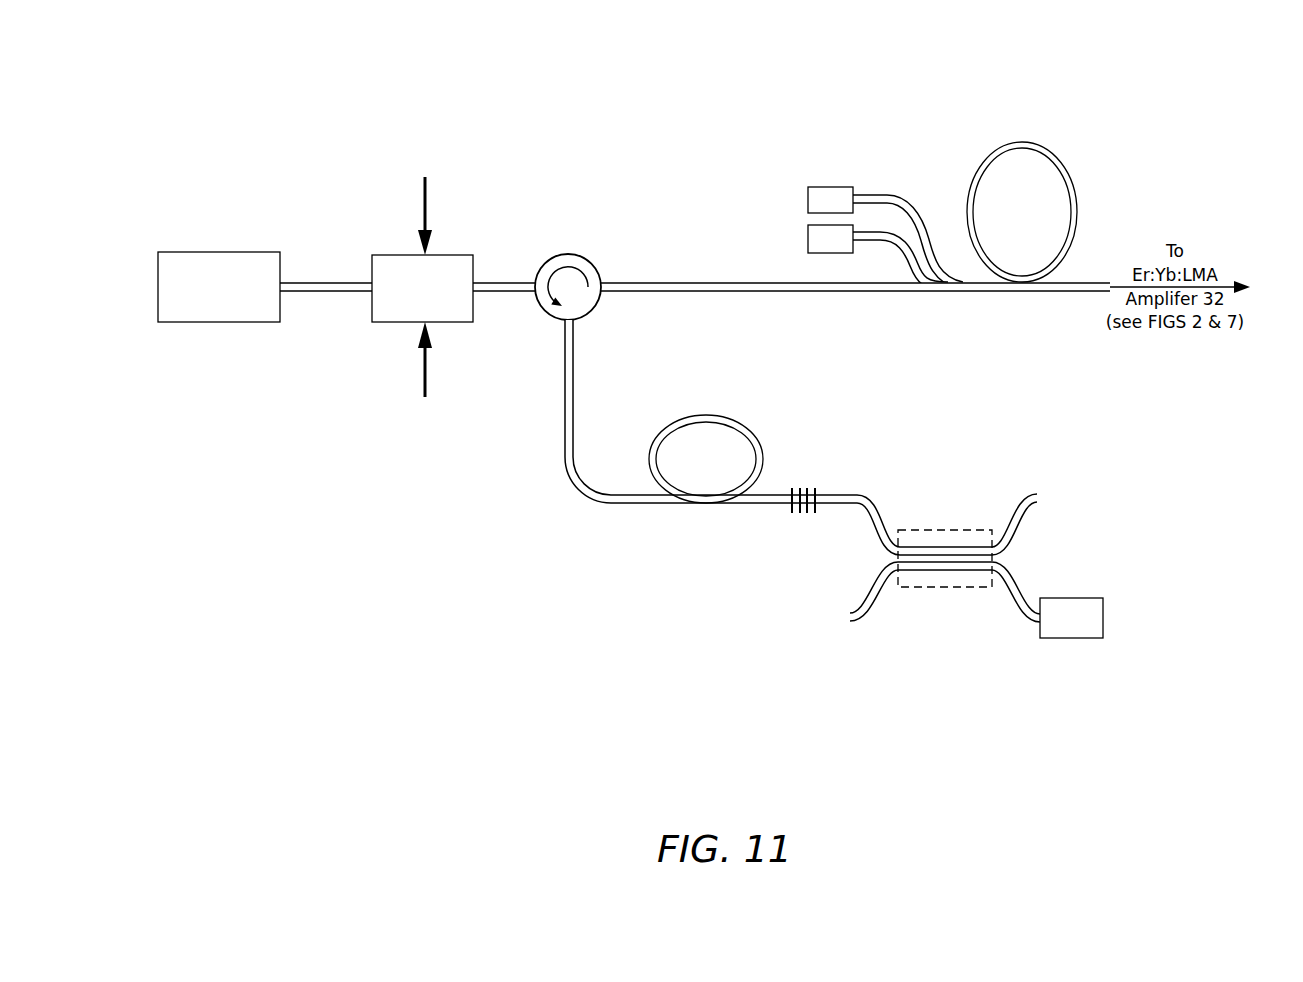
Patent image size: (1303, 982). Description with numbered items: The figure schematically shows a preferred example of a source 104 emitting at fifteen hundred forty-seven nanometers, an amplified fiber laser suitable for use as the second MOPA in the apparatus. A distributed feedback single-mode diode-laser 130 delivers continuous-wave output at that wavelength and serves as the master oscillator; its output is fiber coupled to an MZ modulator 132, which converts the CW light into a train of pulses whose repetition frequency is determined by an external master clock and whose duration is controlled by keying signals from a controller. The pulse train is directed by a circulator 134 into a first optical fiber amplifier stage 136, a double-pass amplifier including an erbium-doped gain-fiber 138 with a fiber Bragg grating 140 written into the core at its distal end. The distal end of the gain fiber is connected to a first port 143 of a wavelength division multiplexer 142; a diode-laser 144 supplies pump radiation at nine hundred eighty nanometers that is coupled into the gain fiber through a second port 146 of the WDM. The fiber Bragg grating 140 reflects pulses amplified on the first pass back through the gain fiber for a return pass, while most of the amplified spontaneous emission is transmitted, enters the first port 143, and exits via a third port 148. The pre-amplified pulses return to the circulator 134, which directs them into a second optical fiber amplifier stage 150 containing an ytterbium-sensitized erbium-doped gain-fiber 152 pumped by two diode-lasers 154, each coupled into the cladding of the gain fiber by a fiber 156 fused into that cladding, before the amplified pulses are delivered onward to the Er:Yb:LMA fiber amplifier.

The 1547 nm source 104 is at (463, 690).
The distributed feedback single-mode diode-laser 130 is at (213, 322).
The MZ modulator 132 is at (372, 262).
The circulator 134 is at (581, 257).
The first optical fiber amplifier stage 136 is at (684, 590).
The erbium-doped gain-fiber 138 is at (742, 425).
The fiber Bragg grating 140 is at (812, 482).
The wavelength division multiplexer 142 is at (946, 597).
The first port 143 is at (857, 507).
The diode-laser 144 is at (1068, 632).
The second port 146 is at (1027, 620).
The third port 148 is at (1033, 493).
The second optical fiber amplifier stage 150 is at (919, 108).
The ytterbium-sensitized erbium-doped gain-fiber 152 is at (1032, 143).
The diode-lasers 154 is at (815, 240).
The fiber 156 is at (880, 193).